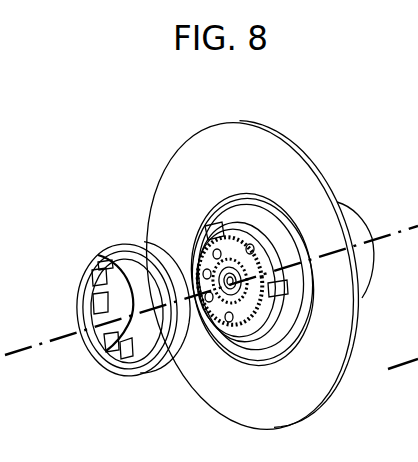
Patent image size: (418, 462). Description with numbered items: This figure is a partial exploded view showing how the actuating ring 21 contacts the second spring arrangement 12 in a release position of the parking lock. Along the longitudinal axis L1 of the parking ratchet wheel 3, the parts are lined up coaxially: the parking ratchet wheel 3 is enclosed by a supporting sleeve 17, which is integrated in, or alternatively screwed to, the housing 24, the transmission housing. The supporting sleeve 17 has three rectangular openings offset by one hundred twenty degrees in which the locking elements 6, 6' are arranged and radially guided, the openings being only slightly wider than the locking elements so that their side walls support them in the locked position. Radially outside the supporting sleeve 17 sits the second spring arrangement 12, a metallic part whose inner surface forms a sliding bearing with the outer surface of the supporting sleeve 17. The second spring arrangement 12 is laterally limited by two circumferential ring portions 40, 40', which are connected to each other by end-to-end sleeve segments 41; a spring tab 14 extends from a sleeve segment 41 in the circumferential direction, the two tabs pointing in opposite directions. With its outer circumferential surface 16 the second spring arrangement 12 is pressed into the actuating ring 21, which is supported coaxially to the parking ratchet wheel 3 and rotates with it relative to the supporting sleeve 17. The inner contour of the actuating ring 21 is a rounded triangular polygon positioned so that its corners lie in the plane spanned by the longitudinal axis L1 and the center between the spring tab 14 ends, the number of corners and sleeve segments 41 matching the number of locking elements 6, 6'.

The parking ratchet wheel 3 is at (253, 318).
The locking element 6 is at (252, 266).
The locking element 6' is at (292, 248).
The second spring arrangement 12 is at (118, 374).
The spring tab 14 is at (123, 262).
The outer circumferential surface 16 is at (97, 287).
The supporting sleeve 17 is at (268, 318).
The actuating ring 21 is at (180, 337).
The housing 24 is at (183, 178).
The circumferential ring portion 40 is at (88, 380).
The circumferential ring portion 40' is at (71, 359).
The sleeve segment 41 is at (97, 290).
The longitudinal axis L1 is at (211, 276).